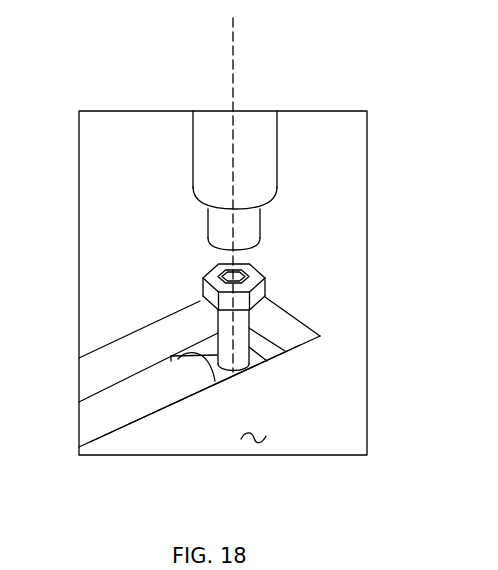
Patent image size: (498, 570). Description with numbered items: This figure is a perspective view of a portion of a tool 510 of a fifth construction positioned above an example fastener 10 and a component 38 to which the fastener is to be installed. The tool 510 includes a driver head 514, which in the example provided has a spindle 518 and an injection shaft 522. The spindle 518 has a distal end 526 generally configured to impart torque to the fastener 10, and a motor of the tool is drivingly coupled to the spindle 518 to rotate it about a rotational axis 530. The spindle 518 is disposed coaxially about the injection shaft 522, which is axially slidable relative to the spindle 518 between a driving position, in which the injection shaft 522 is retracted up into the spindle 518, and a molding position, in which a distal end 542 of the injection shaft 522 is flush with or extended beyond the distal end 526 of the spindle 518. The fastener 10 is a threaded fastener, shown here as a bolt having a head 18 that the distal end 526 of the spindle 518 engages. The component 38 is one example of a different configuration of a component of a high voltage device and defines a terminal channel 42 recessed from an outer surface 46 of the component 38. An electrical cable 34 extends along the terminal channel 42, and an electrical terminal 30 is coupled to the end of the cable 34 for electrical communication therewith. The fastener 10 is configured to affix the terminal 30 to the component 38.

The tool 510 is at (119, 86).
The rotational axis 530 is at (233, 73).
The spindle 518 is at (202, 155).
The driver head 514 is at (221, 203).
The distal end 526 is at (197, 198).
The injection shaft 522 is at (220, 234).
The distal end 542 is at (222, 255).
The head 18 is at (253, 269).
The fastener 10 is at (222, 377).
The component 38 is at (352, 333).
The terminal channel 42 is at (88, 373).
The electrical cable 34 is at (103, 418).
The electrical terminal 30 is at (267, 362).
The outer surface 46 is at (253, 443).